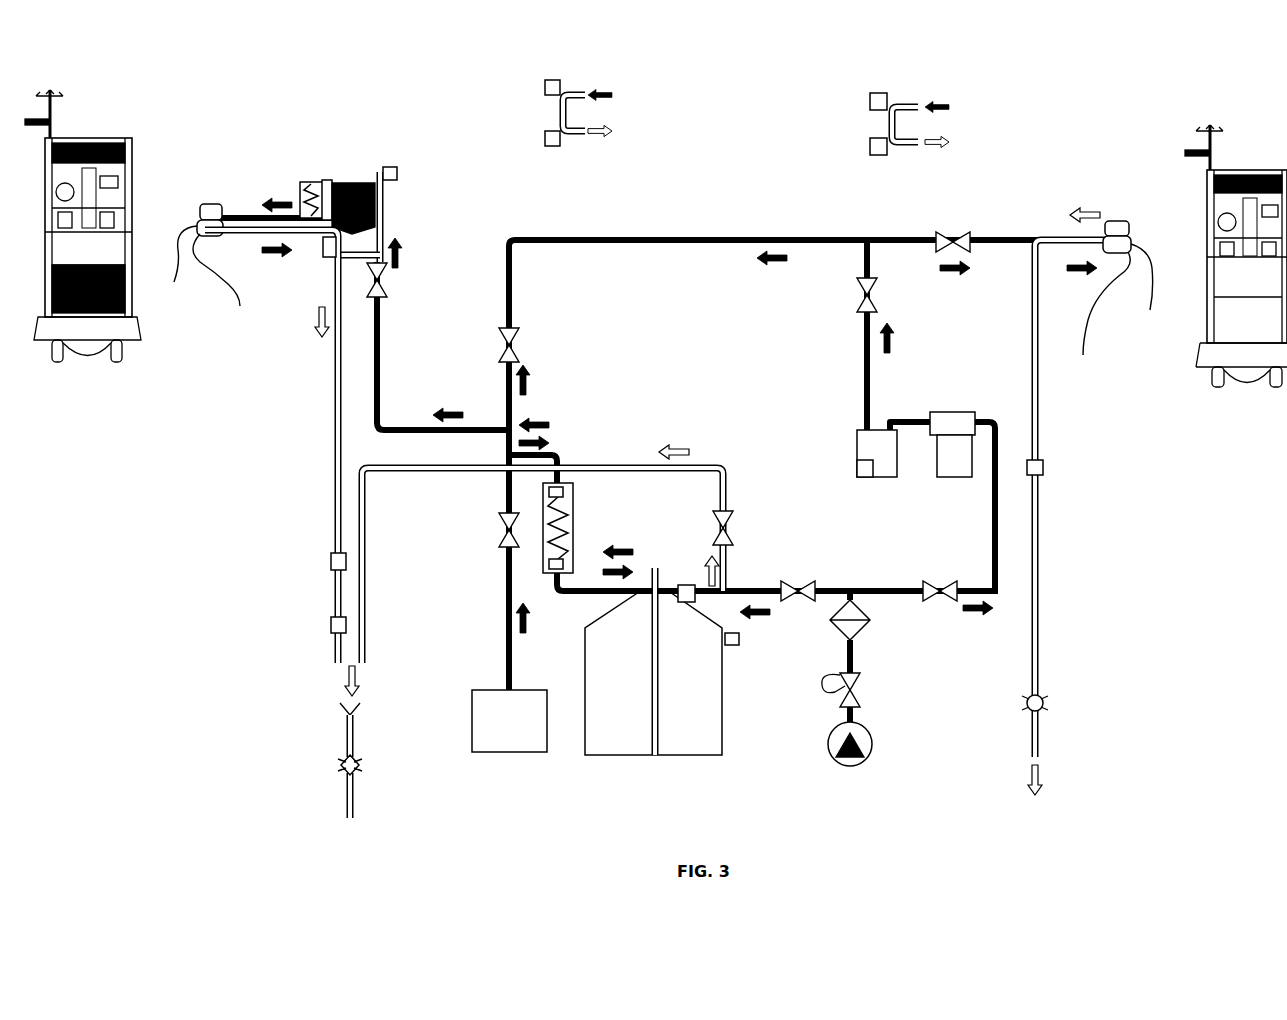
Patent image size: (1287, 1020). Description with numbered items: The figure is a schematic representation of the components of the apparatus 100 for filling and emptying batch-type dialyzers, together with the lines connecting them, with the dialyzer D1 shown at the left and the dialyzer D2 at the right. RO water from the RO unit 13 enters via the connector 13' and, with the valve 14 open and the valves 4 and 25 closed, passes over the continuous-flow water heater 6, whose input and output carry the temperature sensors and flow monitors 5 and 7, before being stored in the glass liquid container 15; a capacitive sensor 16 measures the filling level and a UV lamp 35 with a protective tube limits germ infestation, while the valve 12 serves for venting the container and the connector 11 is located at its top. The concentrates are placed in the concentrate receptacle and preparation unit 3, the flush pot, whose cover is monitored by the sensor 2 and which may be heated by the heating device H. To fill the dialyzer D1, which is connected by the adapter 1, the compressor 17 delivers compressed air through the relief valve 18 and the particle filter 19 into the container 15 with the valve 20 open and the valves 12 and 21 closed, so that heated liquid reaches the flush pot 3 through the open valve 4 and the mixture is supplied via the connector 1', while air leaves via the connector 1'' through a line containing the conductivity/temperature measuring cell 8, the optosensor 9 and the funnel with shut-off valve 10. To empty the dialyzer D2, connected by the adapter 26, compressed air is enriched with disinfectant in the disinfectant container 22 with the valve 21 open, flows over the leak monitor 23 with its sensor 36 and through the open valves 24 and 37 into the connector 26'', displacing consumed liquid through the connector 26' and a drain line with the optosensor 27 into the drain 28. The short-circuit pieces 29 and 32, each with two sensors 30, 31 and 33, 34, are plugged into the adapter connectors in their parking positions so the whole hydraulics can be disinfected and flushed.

The adapter 1 is at (210, 204).
The connector 1' is at (182, 265).
The connector 1'' is at (219, 280).
The sensor for the flush pot cover 2 is at (397, 170).
The concentrate receptacle and preparation unit 3 is at (394, 214).
The valve 4 is at (380, 284).
The temperature sensor and flow monitor 5 is at (563, 492).
The continuous-flow water heater 6 is at (573, 525).
The temperature sensor and flow monitor 7 is at (563, 566).
The conductivity/temperature measuring cell 8 is at (331, 561).
The optosensor 9 is at (331, 625).
The funnel with a shut-off valve 10 is at (340, 746).
The connector 11 is at (686, 585).
The valve 12 is at (733, 530).
The RO unit 13 is at (493, 721).
The connector 13' is at (473, 645).
The valve 14 is at (499, 533).
The liquid container 15 is at (722, 733).
The capacitive sensor 16 is at (735, 645).
The compressor 17 is at (870, 752).
The relief valve 18 is at (862, 693).
The particle filter 19 is at (870, 620).
The valve 20 is at (798, 603).
The valve 21 is at (940, 604).
The disinfectant container 22 is at (953, 412).
The leak monitor 23 is at (857, 443).
The valve 24 is at (857, 296).
The valve 25 is at (499, 348).
The adapter 26 is at (1128, 231).
The connector 26' is at (1142, 292).
The connector 26'' is at (1101, 319).
The optosensor 27 is at (1043, 468).
The drain 28 is at (1043, 710).
The short-circuit piece 29 is at (615, 118).
The sensor 30 is at (545, 87).
The sensor 31 is at (545, 138).
The short-circuit piece 32 is at (948, 124).
The sensor 33 is at (870, 102).
The sensor 34 is at (870, 148).
The UV lamp 35 is at (671, 661).
The sensor 36 is at (864, 480).
The valve 37 is at (953, 232).
The apparatus 100 is at (218, 634).
The heating device H is at (308, 178).
The dialyzer D1 is at (92, 376).
The dialyzer D2 is at (1262, 393).